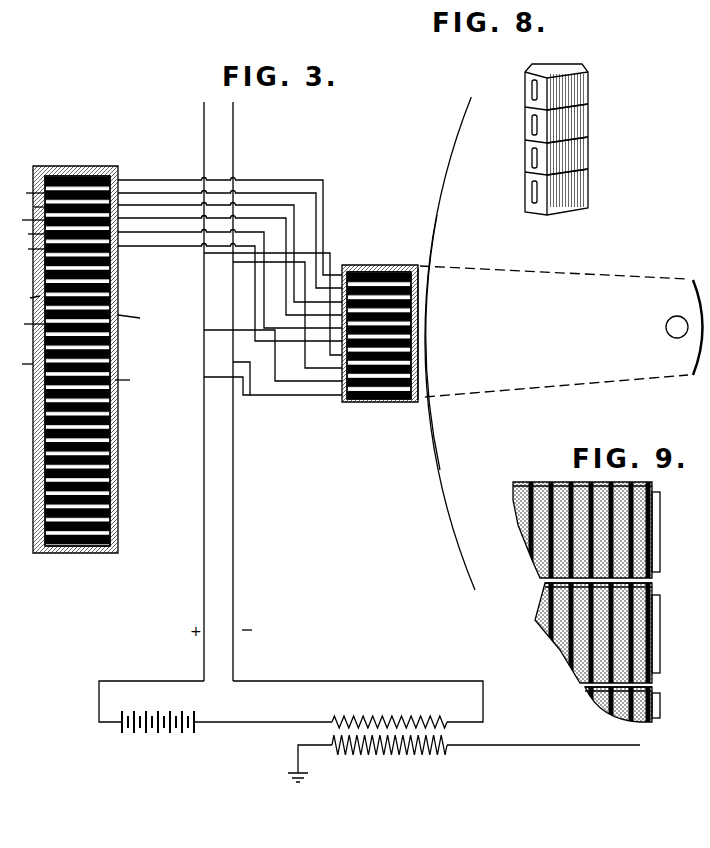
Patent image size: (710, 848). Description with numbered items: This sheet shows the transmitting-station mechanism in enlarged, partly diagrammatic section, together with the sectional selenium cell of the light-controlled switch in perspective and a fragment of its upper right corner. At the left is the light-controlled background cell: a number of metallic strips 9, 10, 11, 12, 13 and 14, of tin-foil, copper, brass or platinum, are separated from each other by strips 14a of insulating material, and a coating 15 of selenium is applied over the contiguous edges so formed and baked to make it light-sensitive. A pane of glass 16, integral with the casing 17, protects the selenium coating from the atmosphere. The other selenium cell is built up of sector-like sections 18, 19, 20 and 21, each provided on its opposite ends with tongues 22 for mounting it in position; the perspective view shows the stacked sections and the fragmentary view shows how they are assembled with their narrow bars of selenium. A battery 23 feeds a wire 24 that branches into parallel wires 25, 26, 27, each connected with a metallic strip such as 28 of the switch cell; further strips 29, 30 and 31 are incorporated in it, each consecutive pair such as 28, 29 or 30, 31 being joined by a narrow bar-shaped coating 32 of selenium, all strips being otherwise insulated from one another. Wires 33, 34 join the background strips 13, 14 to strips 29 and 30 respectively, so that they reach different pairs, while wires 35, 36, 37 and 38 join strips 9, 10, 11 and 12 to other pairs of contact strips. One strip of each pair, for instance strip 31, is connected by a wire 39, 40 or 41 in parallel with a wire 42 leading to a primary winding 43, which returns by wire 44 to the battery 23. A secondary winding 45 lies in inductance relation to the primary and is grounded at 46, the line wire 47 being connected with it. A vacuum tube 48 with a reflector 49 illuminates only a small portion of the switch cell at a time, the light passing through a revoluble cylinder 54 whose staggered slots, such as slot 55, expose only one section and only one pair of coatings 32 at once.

In FIG. 3, the metallic strip 9 is at (28, 250).
In FIG. 3, the metallic strip 10 is at (26, 235).
In FIG. 3, the metallic strip 11 is at (23, 222).
In FIG. 3, the metallic strip 12 is at (30, 206).
In FIG. 3, the metallic strip 13 is at (25, 190).
In FIG. 3, the metallic strip 14 is at (40, 178).
In FIG. 3, the insulating strip 14a is at (85, 302).
In FIG. 3, the selenium coating 15 is at (23, 324).
In FIG. 3, the pane of glass 16 is at (17, 364).
In FIG. 3, the casing 17 is at (134, 380).
In FIG. 3, the section 18 is at (358, 402).
In FIG. 8, the section 18 is at (575, 80).
In FIG. 9, the section 18 is at (525, 482).
In FIG. 8, the section 19 is at (575, 115).
In FIG. 9, the section 19 is at (652, 585).
In FIG. 8, the section 20 is at (577, 145).
In FIG. 9, the section 20 is at (652, 687).
In FIG. 8, the section 21 is at (577, 180).
In FIG. 8, the tongue 22 is at (533, 88).
In FIG. 9, the tongue 22 is at (660, 527).
In FIG. 3, the battery 23 is at (162, 735).
In FIG. 3, the wire 24 is at (196, 681).
In FIG. 3, the branching wire 25 is at (222, 378).
In FIG. 3, the branching wire 26 is at (224, 331).
In FIG. 3, the branching wire 27 is at (221, 254).
In FIG. 3, the metallic strip 28 is at (425, 292).
In FIG. 3, the metallic strip 29 is at (425, 282).
In FIG. 3, the metallic strip 30 is at (425, 272).
In FIG. 3, the metallic strip 31 is at (412, 268).
In FIG. 3, the selenium coating 32 is at (420, 268).
In FIG. 9, the selenium coating 32 is at (650, 503).
In FIG. 3, the wire 33 is at (316, 235).
In FIG. 3, the wire 34 is at (323, 210).
In FIG. 3, the wire 35 is at (130, 247).
In FIG. 3, the wire 36 is at (143, 233).
In FIG. 3, the wire 37 is at (163, 219).
In FIG. 3, the wire 38 is at (178, 206).
In FIG. 3, the wire 39 is at (333, 262).
In FIG. 3, the wire 40 is at (280, 263).
In FIG. 3, the wire 41 is at (249, 363).
In FIG. 3, the wire 42 is at (233, 519).
In FIG. 3, the primary winding 43 is at (388, 722).
In FIG. 3, the wire 44 is at (268, 722).
In FIG. 3, the secondary winding 45 is at (382, 750).
In FIG. 3, the ground 46 is at (296, 768).
In FIG. 3, the line wire 47 is at (530, 745).
In FIG. 3, the vacuum tube 48 is at (666, 327).
In FIG. 3, the reflector 49 is at (706, 300).
In FIG. 3, the revoluble cylinder 54 is at (430, 400).
In FIG. 3, the slot 55 is at (425, 302).